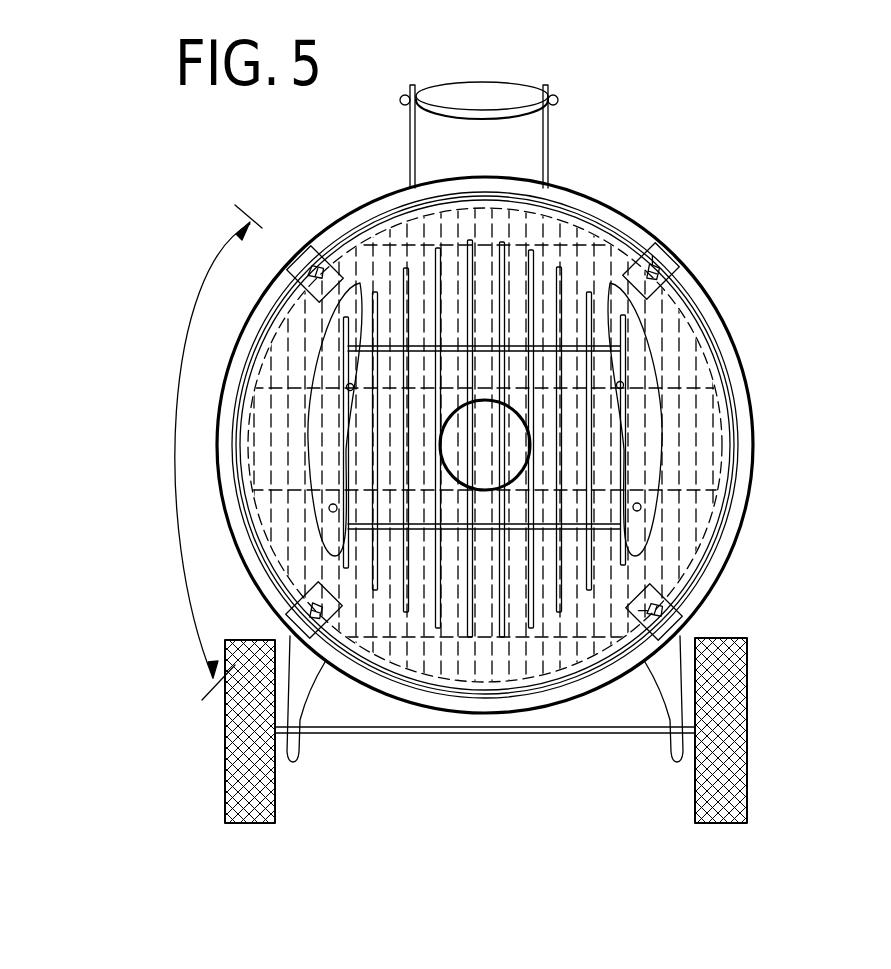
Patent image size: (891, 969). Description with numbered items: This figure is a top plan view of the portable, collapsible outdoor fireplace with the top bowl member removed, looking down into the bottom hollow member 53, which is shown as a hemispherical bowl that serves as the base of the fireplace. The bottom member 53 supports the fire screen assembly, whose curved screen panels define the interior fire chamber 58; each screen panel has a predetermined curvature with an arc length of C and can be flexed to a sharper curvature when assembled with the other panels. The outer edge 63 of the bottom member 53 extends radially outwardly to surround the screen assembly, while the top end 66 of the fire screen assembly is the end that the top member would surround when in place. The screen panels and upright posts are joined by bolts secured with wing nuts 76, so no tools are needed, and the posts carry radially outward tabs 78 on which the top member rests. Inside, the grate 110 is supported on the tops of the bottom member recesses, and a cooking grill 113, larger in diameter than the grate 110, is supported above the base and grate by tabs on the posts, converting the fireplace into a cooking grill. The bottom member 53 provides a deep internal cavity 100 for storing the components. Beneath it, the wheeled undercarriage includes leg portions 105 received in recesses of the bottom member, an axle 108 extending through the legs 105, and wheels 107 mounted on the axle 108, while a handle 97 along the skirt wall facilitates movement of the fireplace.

The bottom hollow member 53 is at (628, 215).
The interior fire chamber 58 is at (557, 240).
The bottom member outer edge 63 is at (640, 232).
The top end of fire screen assembly 66 is at (715, 335).
The wing nuts 76 is at (665, 258).
The tabs or legs 78 is at (306, 258).
The handle 97 is at (508, 97).
The internal cavity 100 is at (695, 457).
The leg portions 105 is at (660, 668).
The wheels 107 is at (705, 780).
The axle 108 is at (515, 735).
The grate 110 is at (622, 430).
The cooking grill 113 is at (540, 215).
The arc length C is at (190, 350).